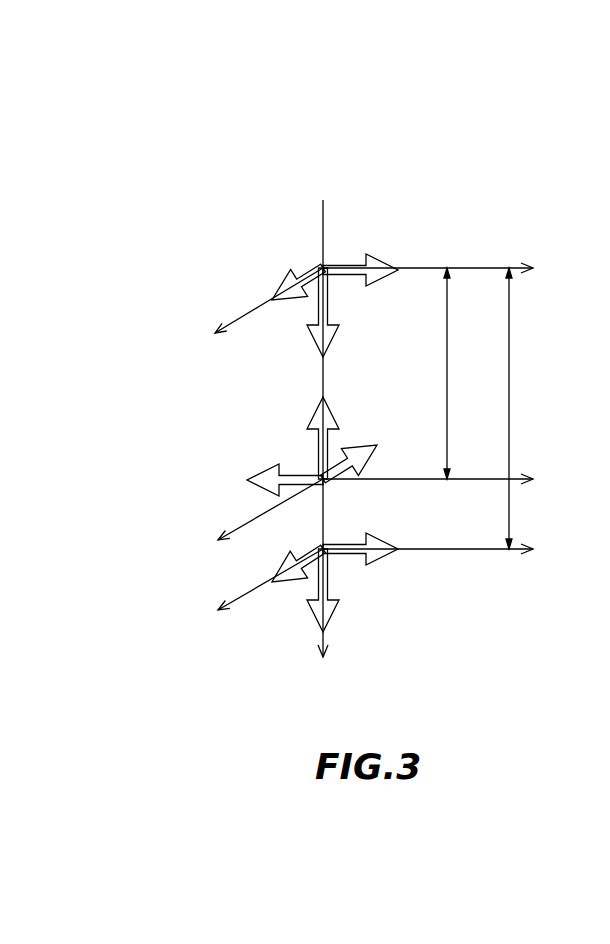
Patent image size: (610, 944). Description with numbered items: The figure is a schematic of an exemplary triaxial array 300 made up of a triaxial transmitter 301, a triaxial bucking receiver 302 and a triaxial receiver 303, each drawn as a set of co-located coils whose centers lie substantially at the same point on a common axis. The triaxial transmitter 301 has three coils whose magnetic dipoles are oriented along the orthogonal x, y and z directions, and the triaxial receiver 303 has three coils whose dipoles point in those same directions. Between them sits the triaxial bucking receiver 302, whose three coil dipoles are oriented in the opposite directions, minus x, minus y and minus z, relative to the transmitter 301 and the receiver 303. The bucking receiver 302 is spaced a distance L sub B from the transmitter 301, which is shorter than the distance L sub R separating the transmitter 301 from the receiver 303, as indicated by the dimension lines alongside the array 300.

The triaxial array 300 is at (231, 184).
The triaxial transmitter 301 is at (247, 248).
The triaxial bucking receiver 302 is at (258, 452).
The triaxial receiver 303 is at (223, 582).